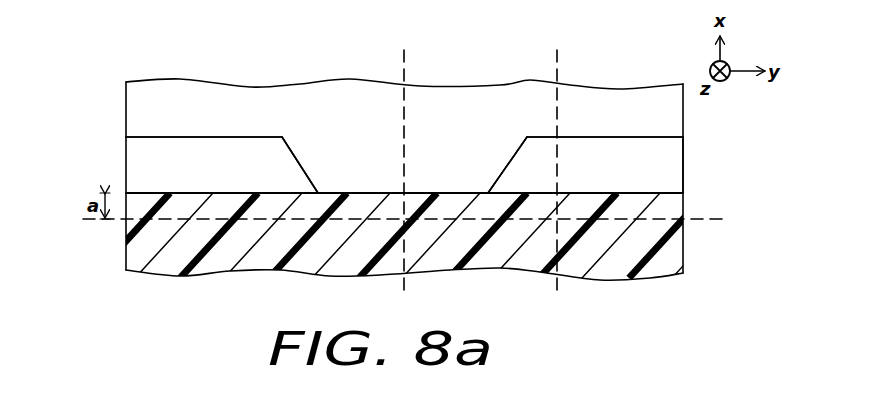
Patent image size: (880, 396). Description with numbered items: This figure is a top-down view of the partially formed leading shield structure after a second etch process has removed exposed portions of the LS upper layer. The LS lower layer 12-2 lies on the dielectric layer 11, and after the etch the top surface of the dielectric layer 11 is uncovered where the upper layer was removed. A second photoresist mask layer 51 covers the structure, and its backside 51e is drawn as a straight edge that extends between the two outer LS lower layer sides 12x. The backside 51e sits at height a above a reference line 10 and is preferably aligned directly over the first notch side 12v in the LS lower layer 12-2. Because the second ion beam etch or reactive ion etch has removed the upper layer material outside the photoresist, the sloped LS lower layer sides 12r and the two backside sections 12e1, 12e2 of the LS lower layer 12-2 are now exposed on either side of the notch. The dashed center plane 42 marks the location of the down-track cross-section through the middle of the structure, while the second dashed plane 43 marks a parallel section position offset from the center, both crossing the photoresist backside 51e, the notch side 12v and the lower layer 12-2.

The dielectric layer 11 is at (142, 108).
The LS lower layer 12-2 is at (126, 162).
The backside section 12e1 is at (212, 137).
The backside section 12e2 is at (615, 137).
The LS lower layer side 12r is at (295, 150).
The first notch side 12v is at (428, 193).
The LS lower layer side 12x is at (683, 152).
The backside 51e is at (147, 193).
The second photoresist mask layer 51 is at (672, 250).
The reference plane 10 is at (404, 222).
The center plane 42 is at (403, 173).
The section line 43 is at (555, 173).